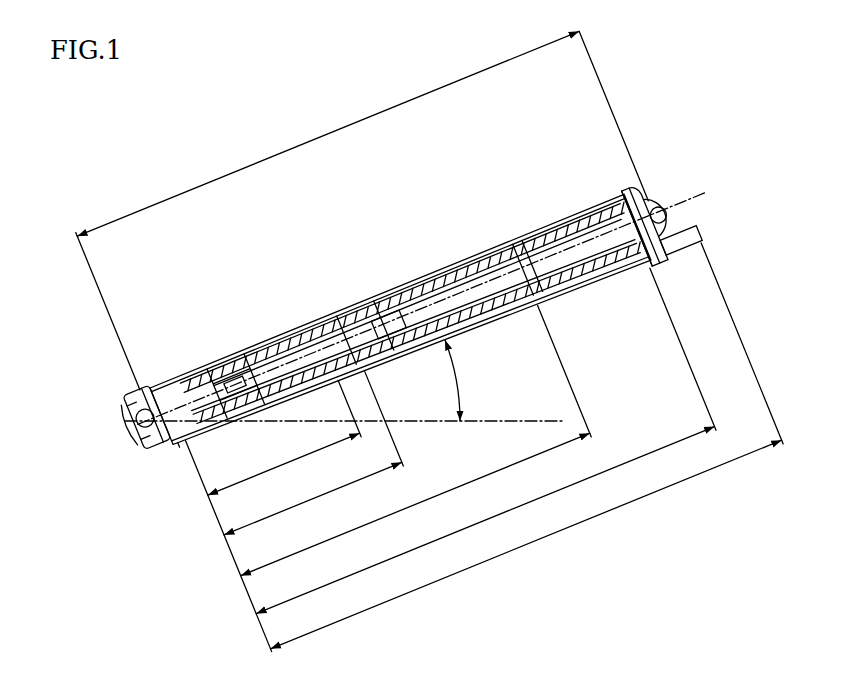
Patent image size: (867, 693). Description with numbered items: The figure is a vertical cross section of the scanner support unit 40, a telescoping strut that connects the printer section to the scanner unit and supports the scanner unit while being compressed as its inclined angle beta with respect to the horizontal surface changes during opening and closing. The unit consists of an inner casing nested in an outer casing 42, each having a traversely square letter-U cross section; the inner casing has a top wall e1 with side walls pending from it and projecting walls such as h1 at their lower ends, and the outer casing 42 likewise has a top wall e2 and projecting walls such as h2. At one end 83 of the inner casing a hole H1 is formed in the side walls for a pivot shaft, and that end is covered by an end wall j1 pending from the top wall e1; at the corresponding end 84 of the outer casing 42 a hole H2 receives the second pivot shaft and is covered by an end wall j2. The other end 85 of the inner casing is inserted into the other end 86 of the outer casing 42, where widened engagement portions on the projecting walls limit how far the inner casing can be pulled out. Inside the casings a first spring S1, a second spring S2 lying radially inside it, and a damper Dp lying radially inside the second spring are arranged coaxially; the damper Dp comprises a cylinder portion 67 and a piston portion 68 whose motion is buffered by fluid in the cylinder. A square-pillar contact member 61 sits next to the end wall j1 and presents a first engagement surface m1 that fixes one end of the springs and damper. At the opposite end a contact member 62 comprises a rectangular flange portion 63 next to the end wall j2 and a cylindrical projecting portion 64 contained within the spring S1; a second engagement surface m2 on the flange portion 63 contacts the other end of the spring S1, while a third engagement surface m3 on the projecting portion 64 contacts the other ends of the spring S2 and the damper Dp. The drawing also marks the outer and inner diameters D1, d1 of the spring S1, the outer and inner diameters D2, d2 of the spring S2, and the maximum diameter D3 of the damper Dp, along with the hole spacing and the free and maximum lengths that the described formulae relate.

The scanner support unit 40 is at (322, 252).
The outer casing 42 is at (518, 232).
The contact member 61 is at (125, 395).
The contact member 62 is at (712, 50).
The flange portion 63 is at (645, 197).
The projecting portion 64 is at (608, 198).
The cylinder portion 67 is at (272, 408).
The piston portion 68 is at (300, 383).
The end of the inner casing 83 is at (138, 448).
The end of the outer casing 84 is at (668, 202).
The other end of the inner casing 85 is at (398, 265).
The other end of the outer casing 86 is at (385, 382).
The hole H1 is at (135, 420).
The hole H2 is at (672, 216).
The end wall j1 is at (128, 410).
The end wall j2 is at (650, 196).
The top wall e1 is at (250, 335).
The top wall e2 is at (560, 205).
The spring S1 is at (583, 292).
The spring S2 is at (222, 362).
The first engagement surface m1 is at (200, 435).
The second engagement surface m2 is at (638, 292).
The third engagement surface m3 is at (548, 300).
The projecting wall h1 is at (162, 455).
The projecting wall h2 is at (610, 285).
The damper Dp is at (185, 362).
The outer diameter of the spring S1 D1 is at (505, 268).
The outer diameter of the spring S2 D2 is at (395, 298).
The maximum diameter of the damper D3 is at (318, 325).
The inner diameter of the spring S1 d1 is at (460, 285).
The inner diameter of the spring S2 d2 is at (345, 312).
The inclined angle beta is at (345, 380).